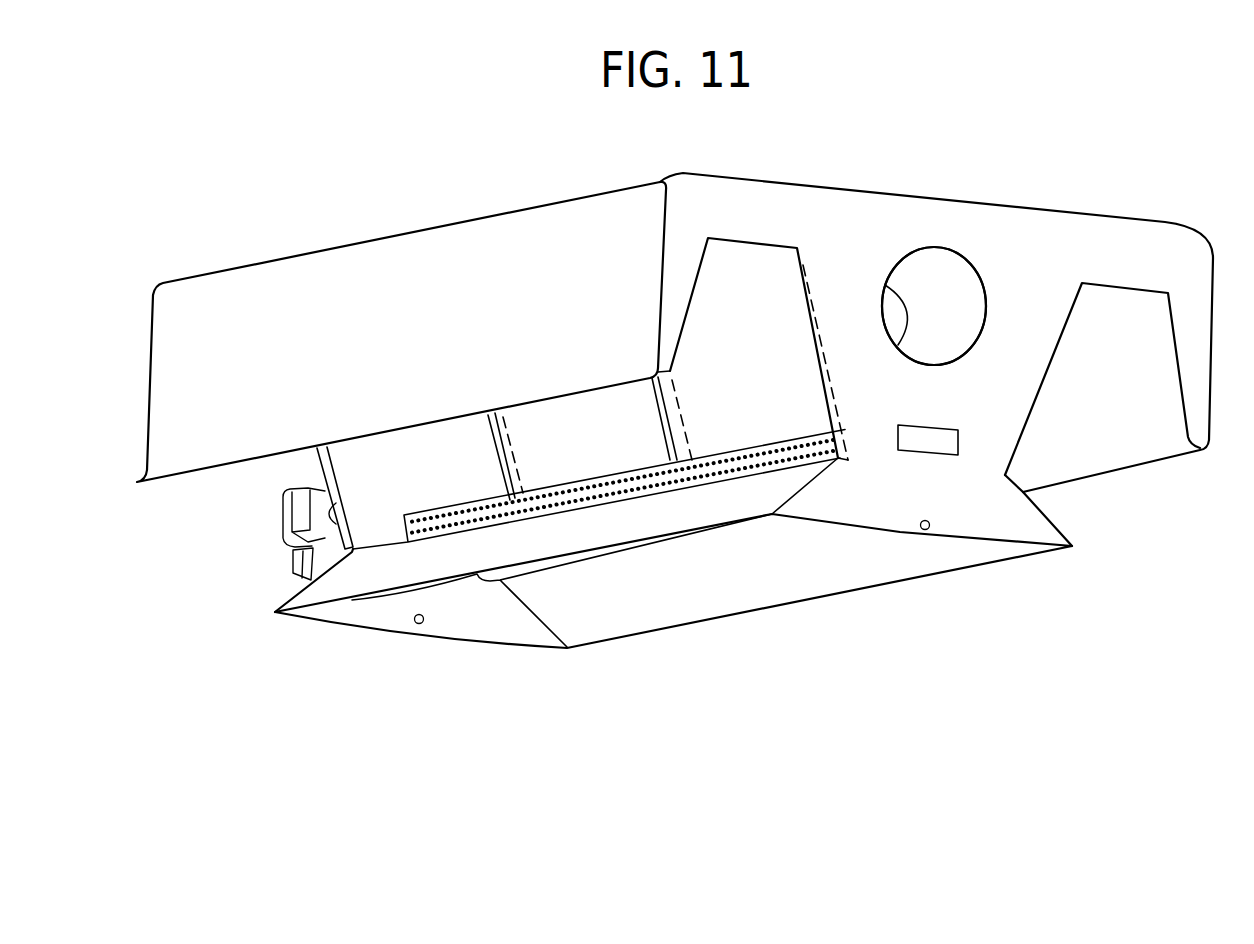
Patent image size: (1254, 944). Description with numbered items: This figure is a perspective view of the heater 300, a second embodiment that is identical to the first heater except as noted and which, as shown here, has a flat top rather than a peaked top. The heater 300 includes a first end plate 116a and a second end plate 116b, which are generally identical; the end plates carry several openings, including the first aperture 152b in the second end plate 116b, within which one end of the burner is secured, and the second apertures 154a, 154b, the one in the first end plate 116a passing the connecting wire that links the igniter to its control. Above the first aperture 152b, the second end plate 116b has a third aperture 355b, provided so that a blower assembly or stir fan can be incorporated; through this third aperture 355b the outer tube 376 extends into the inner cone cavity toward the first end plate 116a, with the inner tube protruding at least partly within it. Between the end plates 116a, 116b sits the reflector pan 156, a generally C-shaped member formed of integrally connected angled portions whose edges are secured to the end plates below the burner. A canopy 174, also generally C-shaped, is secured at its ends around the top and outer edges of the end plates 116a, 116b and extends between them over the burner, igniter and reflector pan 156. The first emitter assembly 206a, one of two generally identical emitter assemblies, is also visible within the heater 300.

The heater 300 is at (667, 690).
The canopy 174 is at (347, 276).
The second end plate 116b is at (1050, 243).
The first emitter assembly 206a is at (732, 300).
The outer tube 376 is at (923, 275).
The third aperture 355b is at (975, 263).
The first aperture 152b is at (925, 432).
The reflector pan 156 is at (718, 606).
The first end plate 116a is at (360, 616).
The second aperture 154a is at (421, 624).
The second aperture 154b is at (927, 530).